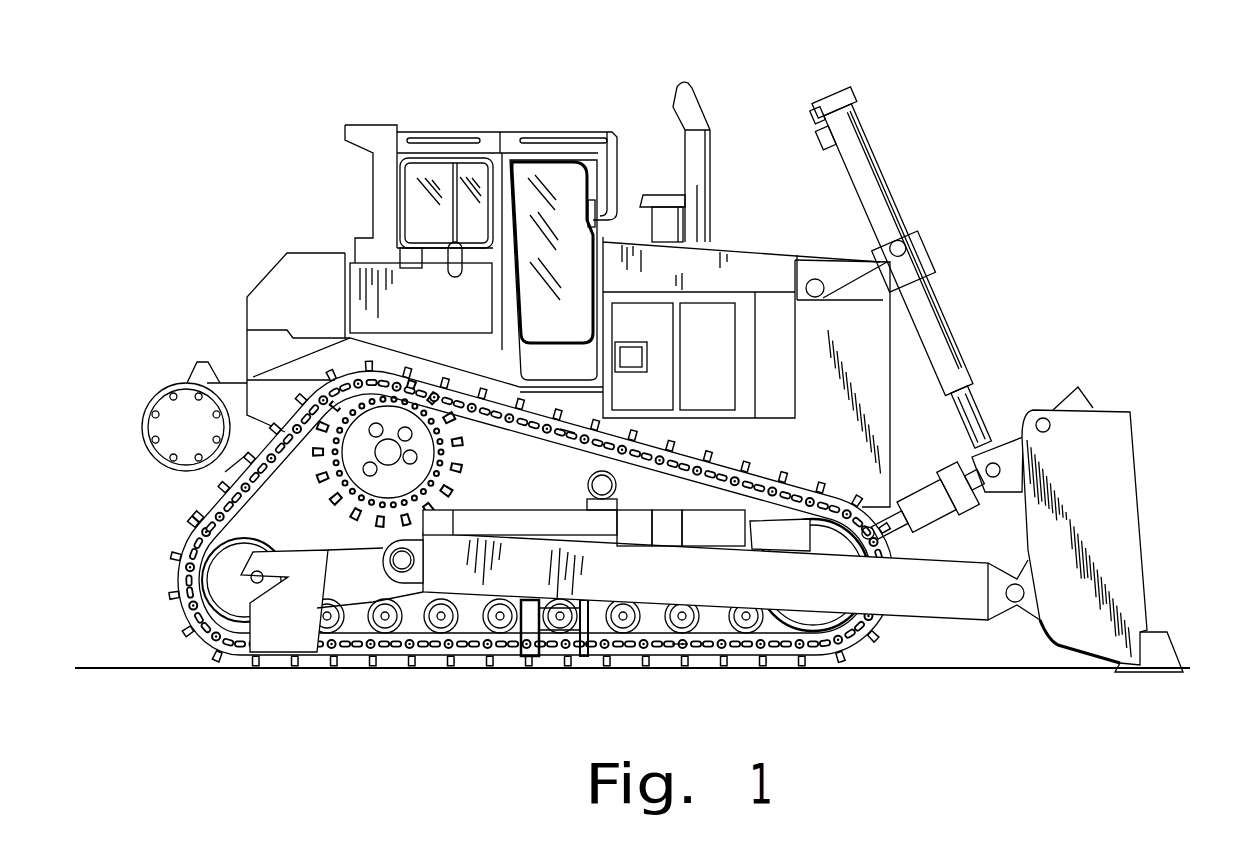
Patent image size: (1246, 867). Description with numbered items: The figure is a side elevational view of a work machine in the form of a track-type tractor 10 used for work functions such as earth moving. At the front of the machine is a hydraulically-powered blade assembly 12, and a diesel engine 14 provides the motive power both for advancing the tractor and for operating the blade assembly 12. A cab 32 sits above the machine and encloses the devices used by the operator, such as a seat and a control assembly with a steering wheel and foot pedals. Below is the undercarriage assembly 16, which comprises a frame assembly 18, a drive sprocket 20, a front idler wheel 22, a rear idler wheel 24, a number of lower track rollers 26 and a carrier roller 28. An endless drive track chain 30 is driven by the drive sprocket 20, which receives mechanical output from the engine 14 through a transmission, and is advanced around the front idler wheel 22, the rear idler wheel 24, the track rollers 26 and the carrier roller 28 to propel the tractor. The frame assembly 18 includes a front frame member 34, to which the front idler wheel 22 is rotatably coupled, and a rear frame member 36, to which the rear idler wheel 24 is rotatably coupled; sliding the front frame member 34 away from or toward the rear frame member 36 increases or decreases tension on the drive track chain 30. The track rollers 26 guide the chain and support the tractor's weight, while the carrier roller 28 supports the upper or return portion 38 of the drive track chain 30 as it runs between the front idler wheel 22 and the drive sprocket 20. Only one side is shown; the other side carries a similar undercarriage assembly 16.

The track-type tractor 10 is at (750, 98).
The blade assembly 12 is at (1052, 360).
The diesel engine 14 is at (712, 324).
The undercarriage assembly 16 is at (706, 444).
The frame assembly 18 is at (511, 523).
The drive sprocket 20 is at (455, 460).
The front idler wheel 22 is at (823, 618).
The rear idler wheel 24 is at (245, 607).
The lower track rollers 26 is at (408, 633).
The carrier roller 28 is at (597, 486).
The endless drive track chain 30 is at (680, 650).
The cab 32 is at (494, 126).
The front frame member 34 is at (772, 542).
The rear frame member 36 is at (330, 600).
The upper or return portion 38 is at (564, 412).